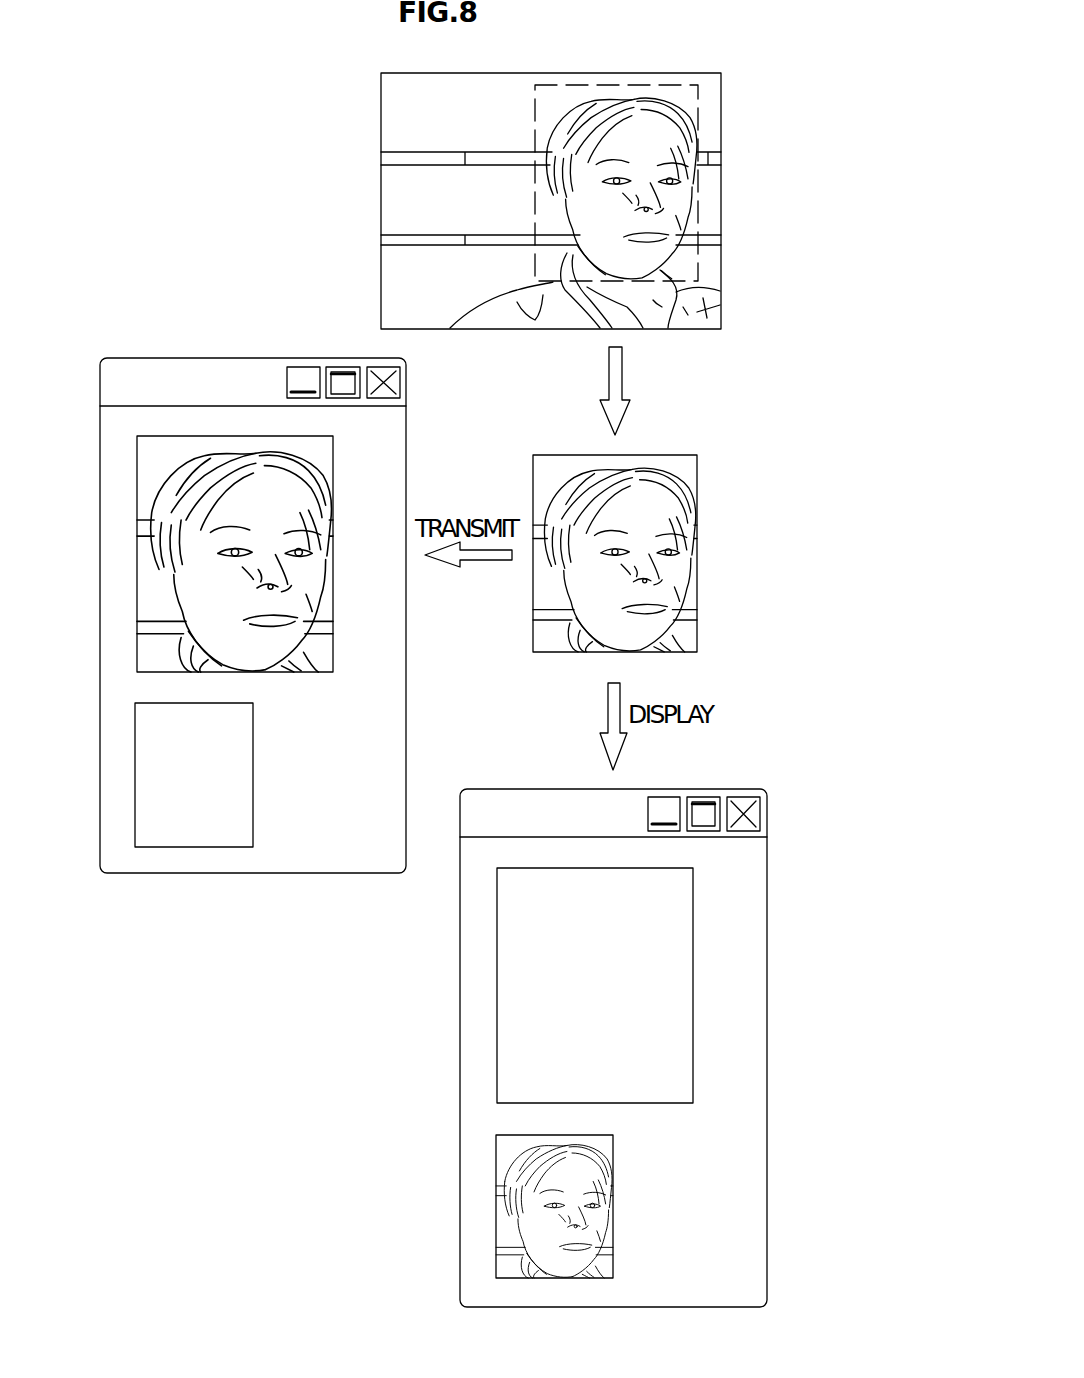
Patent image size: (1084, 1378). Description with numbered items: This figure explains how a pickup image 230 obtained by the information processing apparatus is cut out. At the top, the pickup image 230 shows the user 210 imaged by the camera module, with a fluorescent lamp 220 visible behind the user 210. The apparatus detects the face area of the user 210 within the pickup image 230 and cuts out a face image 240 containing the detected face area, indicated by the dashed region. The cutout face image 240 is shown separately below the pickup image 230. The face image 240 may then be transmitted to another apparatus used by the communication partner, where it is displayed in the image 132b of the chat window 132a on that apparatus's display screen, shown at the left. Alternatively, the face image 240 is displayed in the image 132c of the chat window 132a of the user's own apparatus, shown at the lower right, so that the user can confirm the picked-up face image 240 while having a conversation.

The pickup image 230 is at (595, 73).
The face image 240 is at (699, 107).
The fluorescent lamp 220 is at (721, 160).
The user 210 is at (706, 307).
The chat window 132a is at (406, 690).
The image 132b is at (137, 555).
The image 132c is at (135, 735).